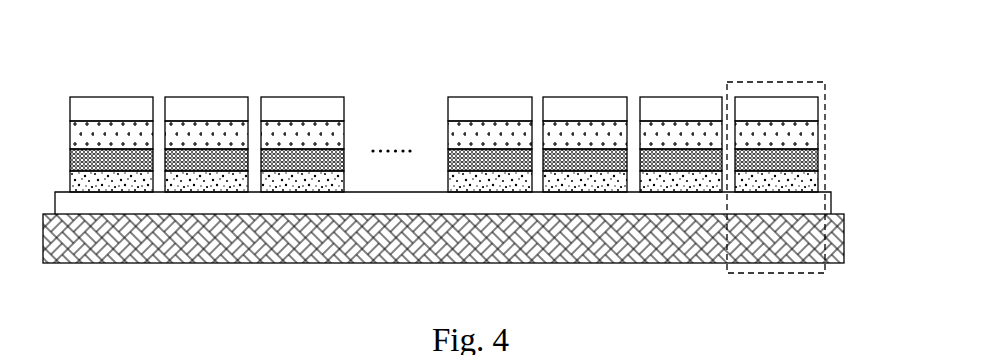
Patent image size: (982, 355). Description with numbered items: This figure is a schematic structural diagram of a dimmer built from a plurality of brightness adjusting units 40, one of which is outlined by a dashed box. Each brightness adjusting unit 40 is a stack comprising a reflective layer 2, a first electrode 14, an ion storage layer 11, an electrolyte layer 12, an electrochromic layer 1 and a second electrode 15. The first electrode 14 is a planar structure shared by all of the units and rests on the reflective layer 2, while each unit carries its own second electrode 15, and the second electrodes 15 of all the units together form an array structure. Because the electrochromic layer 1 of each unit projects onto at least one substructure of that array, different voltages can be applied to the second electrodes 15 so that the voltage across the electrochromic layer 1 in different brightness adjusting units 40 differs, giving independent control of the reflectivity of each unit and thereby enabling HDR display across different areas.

The brightness adjusting unit 40 is at (780, 82).
The second electrode 15 is at (797, 107).
The electrochromic layer 1 is at (802, 135).
The electrolyte layer 12 is at (803, 160).
The ion storage layer 11 is at (805, 183).
The first electrode 14 is at (818, 203).
The reflective layer 2 is at (833, 243).